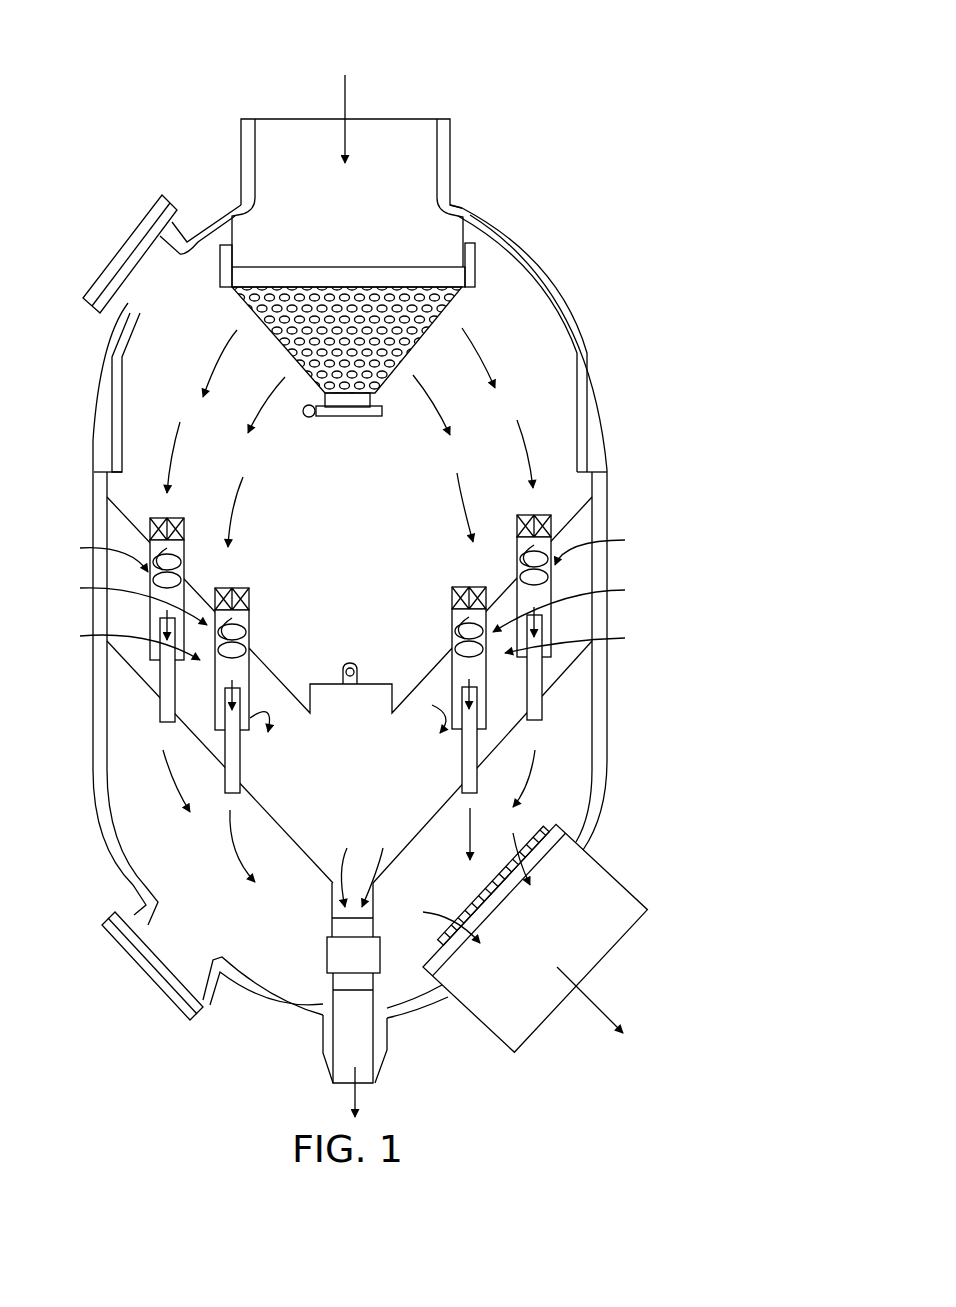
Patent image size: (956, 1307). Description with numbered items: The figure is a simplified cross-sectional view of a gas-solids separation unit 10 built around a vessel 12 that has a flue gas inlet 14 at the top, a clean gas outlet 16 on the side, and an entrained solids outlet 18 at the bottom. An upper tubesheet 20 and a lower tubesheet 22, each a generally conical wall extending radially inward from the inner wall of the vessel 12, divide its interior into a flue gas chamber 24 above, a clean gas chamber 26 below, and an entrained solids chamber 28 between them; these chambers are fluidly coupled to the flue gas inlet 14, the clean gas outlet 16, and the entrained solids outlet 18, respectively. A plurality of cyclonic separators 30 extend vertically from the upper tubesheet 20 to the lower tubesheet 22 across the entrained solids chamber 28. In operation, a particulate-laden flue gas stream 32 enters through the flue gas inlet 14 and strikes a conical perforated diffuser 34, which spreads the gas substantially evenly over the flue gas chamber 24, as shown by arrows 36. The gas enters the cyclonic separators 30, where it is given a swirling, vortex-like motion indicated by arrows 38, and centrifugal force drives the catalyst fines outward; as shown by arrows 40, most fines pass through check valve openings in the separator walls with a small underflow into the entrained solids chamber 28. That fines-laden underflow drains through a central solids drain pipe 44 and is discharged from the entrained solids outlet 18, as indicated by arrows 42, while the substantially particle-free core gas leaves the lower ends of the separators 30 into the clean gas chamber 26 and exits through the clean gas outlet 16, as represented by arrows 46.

The gas-solids separation unit 10 is at (582, 41).
The vessel 12 is at (548, 262).
The flue gas inlet 14 is at (422, 120).
The clean gas outlet 16 is at (613, 935).
The entrained solids outlet 18 is at (343, 1048).
The upper tubesheet 20 is at (277, 668).
The lower tubesheet 22 is at (265, 808).
The flue gas chamber 24 is at (363, 517).
The clean gas chamber 26 is at (268, 954).
The entrained solids chamber 28 is at (363, 781).
The cyclonic separator 30 is at (350, 641).
The flue gas stream 32 is at (332, 106).
The conical perforated diffuser 34 is at (292, 295).
The arrows indicating distributed flue gas flow 36 is at (225, 358).
The arrows indicating swirling flow 38 is at (184, 565).
The arrows indicating catalyst fines flow 40 is at (358, 630).
The arrows indicating underflow discharge 42 is at (328, 1092).
The central solids drain pipe 44 is at (340, 929).
The arrows indicating clean gas flow 46 is at (168, 784).